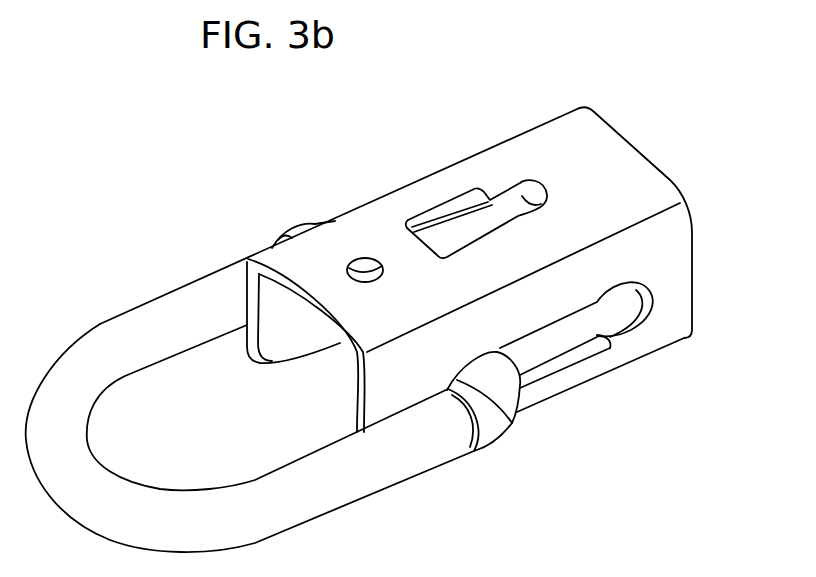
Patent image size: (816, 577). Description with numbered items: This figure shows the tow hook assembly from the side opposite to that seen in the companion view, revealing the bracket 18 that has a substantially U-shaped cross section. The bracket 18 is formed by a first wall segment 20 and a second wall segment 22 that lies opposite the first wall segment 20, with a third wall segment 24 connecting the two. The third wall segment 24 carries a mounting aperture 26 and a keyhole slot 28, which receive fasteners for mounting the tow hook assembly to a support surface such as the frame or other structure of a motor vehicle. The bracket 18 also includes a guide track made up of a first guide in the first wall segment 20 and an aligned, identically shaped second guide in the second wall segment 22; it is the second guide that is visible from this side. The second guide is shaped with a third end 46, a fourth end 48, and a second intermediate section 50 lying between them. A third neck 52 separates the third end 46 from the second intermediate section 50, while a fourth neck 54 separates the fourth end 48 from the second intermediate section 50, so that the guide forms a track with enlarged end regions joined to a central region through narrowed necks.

The bracket 18 is at (692, 287).
The first wall segment 20 is at (288, 335).
The second wall segment 22 is at (655, 340).
The third wall segment 24 is at (568, 165).
The mounting aperture 26 is at (362, 262).
The keyhole slot 28 is at (453, 203).
The third end 46 is at (650, 308).
The fourth end 48 is at (512, 423).
The second intermediate section 50 is at (550, 372).
The third neck 52 is at (608, 348).
The fourth neck 54 is at (498, 352).